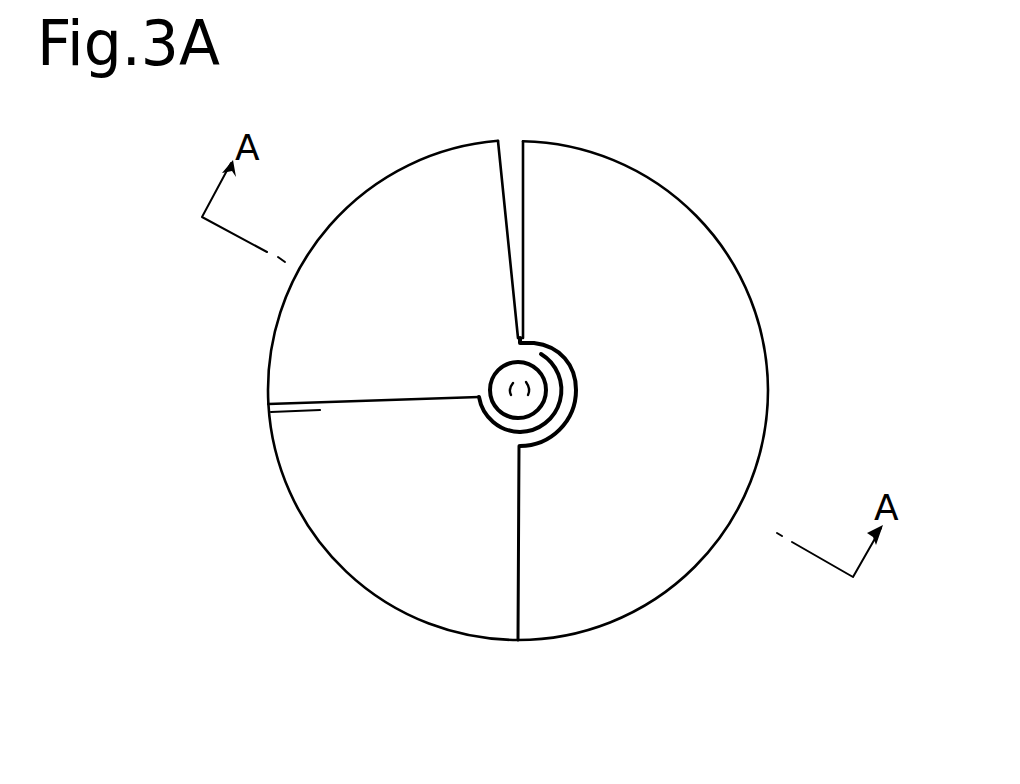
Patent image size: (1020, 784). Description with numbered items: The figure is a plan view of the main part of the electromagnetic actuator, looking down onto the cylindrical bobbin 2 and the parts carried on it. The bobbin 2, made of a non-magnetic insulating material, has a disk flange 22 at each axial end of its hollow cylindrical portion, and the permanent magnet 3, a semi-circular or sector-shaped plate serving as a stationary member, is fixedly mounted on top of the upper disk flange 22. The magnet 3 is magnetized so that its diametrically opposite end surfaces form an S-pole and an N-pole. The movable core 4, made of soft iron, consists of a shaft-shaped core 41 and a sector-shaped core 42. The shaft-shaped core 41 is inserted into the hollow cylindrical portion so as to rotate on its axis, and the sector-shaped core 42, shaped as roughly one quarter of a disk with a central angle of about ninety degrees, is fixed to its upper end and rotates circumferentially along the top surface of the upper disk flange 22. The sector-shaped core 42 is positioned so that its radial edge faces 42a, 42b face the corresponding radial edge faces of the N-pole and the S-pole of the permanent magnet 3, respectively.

The cylindrical bobbin 2 is at (281, 483).
The permanent magnet 3 is at (720, 300).
The movable core 4 is at (280, 298).
The disk flange 22 is at (481, 610).
The shaft-shaped core 41 is at (507, 408).
The sector-shaped core 42 is at (427, 218).
The radial edge face 42a is at (505, 199).
The radial edge face 42b is at (313, 412).